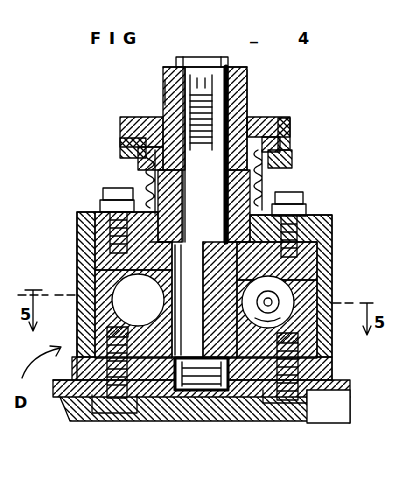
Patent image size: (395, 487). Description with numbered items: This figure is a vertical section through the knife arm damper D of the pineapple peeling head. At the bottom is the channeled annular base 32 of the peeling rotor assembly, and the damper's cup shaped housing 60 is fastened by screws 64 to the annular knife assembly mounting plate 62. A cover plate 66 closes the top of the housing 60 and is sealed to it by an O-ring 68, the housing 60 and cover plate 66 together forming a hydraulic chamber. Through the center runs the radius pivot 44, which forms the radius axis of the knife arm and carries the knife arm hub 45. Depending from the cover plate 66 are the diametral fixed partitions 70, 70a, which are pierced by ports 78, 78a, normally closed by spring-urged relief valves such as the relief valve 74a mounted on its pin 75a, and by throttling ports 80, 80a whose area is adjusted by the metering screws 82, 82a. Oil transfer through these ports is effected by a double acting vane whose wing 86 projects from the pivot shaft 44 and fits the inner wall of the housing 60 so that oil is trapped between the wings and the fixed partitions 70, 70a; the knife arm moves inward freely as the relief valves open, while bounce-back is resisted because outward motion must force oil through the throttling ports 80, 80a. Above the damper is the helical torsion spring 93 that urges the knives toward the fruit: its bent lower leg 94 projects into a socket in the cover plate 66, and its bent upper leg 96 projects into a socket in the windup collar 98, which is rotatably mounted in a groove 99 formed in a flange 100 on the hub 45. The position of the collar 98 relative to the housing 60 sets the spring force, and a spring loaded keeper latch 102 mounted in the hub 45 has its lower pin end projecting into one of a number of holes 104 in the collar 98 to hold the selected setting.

The channeled annular base 32 is at (68, 415).
The radius pivot 44 is at (249, 82).
The knife arm hub 45 is at (152, 77).
The cup shaped housing 60 is at (328, 240).
The annular knife assembly mounting plate 62 is at (334, 381).
The screws 64 is at (107, 405).
The cover plate 66 is at (78, 212).
The O-ring 68 is at (90, 222).
The fixed partition 70 is at (84, 262).
The fixed partition 70a is at (312, 348).
The relief valve 74a is at (300, 322).
The pin 75a is at (273, 302).
The port 78 is at (112, 282).
The port 78a is at (292, 286).
The throttling port 80 is at (92, 250).
The throttling port 80a is at (318, 262).
The metering screw 82 is at (108, 192).
The metering screw 82a is at (305, 197).
The vane wing 86 is at (212, 396).
The torsion spring 93 is at (281, 147).
The bent lower leg 94 is at (199, 212).
The bent upper leg 96 is at (120, 118).
The windup collar 98 is at (108, 157).
The groove 99 is at (284, 118).
The flange 100 is at (291, 126).
The spring loaded keeper latch 102 is at (163, 93).
The holes 104 is at (118, 150).